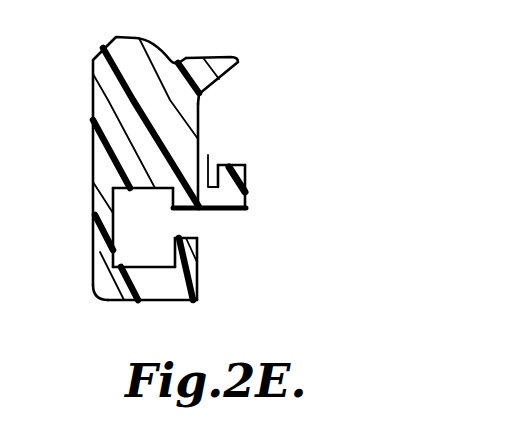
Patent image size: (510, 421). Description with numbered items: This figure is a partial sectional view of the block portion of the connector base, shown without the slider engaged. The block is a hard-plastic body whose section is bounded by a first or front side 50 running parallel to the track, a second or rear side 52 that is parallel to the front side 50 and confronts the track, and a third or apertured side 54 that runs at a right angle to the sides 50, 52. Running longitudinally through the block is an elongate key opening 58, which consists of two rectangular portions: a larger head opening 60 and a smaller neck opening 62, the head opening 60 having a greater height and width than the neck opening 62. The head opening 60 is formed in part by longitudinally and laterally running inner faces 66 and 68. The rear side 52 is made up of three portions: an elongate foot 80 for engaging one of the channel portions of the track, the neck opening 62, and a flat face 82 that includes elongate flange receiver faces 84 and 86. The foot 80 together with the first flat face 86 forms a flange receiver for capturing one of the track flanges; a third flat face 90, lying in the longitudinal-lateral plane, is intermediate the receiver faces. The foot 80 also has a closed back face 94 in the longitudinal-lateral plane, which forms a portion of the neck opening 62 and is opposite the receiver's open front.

The front side 50 is at (93, 105).
The rear side 52 is at (200, 104).
The apertured side 54 is at (122, 302).
The key opening 58 is at (218, 232).
The head opening 60 is at (131, 218).
The neck opening 62 is at (185, 222).
The inner face 66 is at (143, 200).
The inner face 68 is at (112, 261).
The foot 80 is at (259, 182).
The flat face 82 is at (199, 122).
The flange receiver face 84 is at (199, 245).
The first flat face 86 is at (208, 170).
The third flat face 90 is at (228, 164).
The closed back face 94 is at (219, 212).